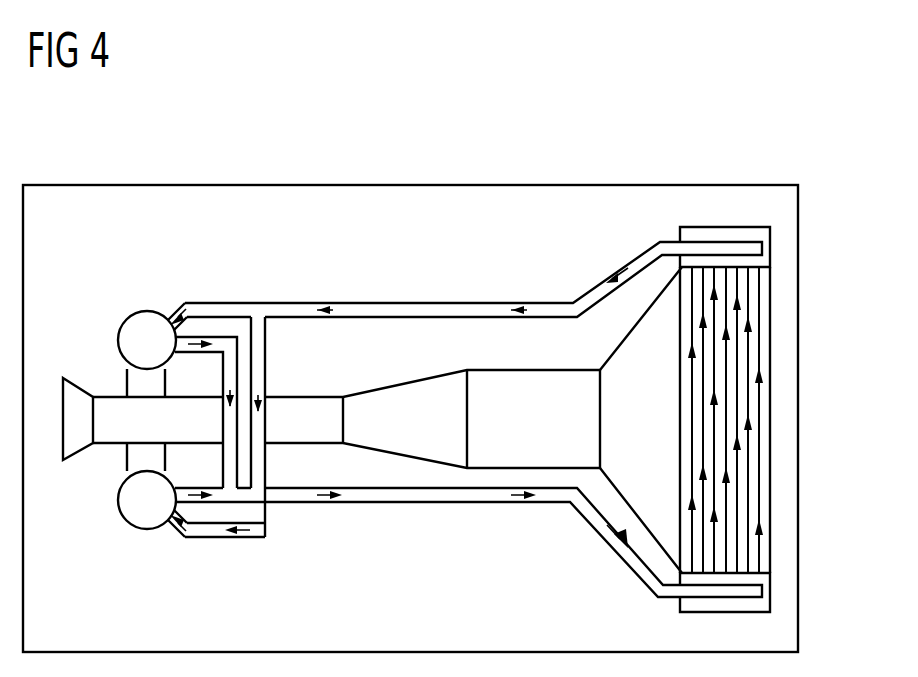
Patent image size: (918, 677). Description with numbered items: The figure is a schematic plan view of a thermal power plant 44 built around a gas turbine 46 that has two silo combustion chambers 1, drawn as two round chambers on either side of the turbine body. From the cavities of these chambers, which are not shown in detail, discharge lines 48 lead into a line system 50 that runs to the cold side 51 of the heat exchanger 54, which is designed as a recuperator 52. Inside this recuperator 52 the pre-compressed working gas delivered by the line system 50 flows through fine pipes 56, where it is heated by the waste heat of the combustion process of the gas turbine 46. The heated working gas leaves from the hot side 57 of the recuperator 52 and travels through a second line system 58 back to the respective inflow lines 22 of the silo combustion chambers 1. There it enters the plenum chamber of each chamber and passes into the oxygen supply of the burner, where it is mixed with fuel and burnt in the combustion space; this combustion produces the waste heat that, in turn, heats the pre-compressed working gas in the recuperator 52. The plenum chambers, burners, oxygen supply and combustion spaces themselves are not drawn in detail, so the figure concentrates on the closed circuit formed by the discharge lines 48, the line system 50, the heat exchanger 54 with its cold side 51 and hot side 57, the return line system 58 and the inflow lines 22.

The silo combustion chamber 1 is at (118, 335).
The inflow line 22 is at (172, 306).
The thermal power plant 44 is at (630, 140).
The gas turbine 46 is at (336, 576).
The discharge line 48 is at (222, 338).
The line system 50 is at (448, 505).
The cold side 51 is at (773, 590).
The recuperator 52 is at (784, 420).
The heat exchanger 54 is at (786, 342).
The fine pipes 56 is at (758, 473).
The hot side 57 is at (773, 250).
The line system 58 is at (405, 301).